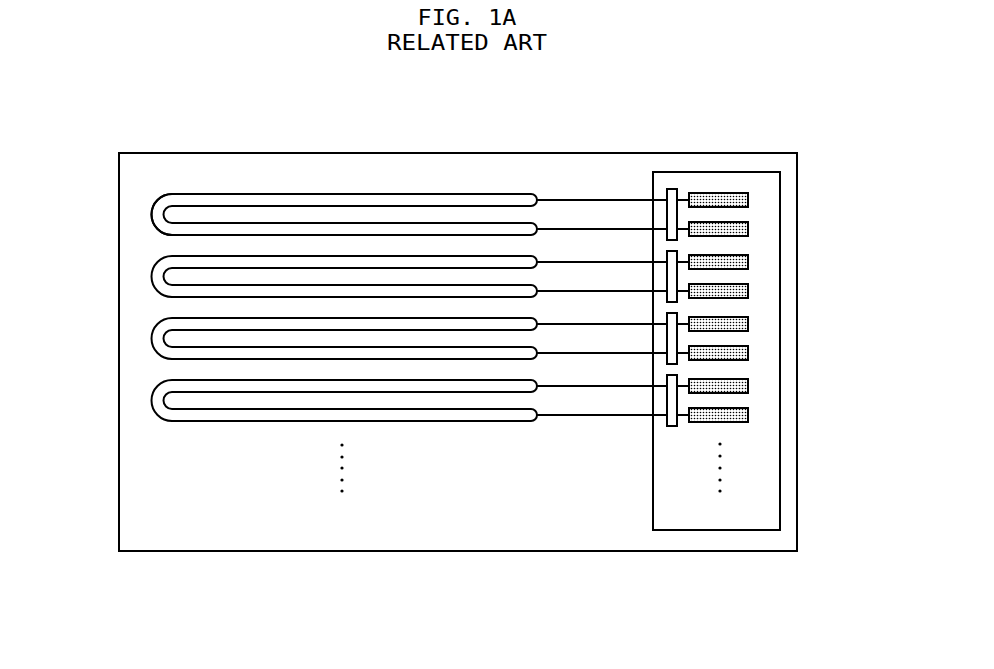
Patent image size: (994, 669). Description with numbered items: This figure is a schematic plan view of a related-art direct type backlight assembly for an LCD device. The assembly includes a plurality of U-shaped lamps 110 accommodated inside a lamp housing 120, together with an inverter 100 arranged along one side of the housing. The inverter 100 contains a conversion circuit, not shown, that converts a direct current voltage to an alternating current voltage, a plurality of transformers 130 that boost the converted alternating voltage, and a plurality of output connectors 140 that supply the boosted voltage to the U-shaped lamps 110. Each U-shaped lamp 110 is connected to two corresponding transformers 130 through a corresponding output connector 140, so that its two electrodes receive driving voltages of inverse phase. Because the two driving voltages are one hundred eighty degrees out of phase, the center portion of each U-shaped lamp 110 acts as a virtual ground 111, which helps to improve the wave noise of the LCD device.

The inverter 100 is at (773, 423).
The U-shaped lamp 110 is at (323, 193).
The virtual ground 111 is at (153, 213).
The lamp housing 120 is at (258, 152).
The transformer 130 is at (723, 193).
The output connector 140 is at (672, 189).